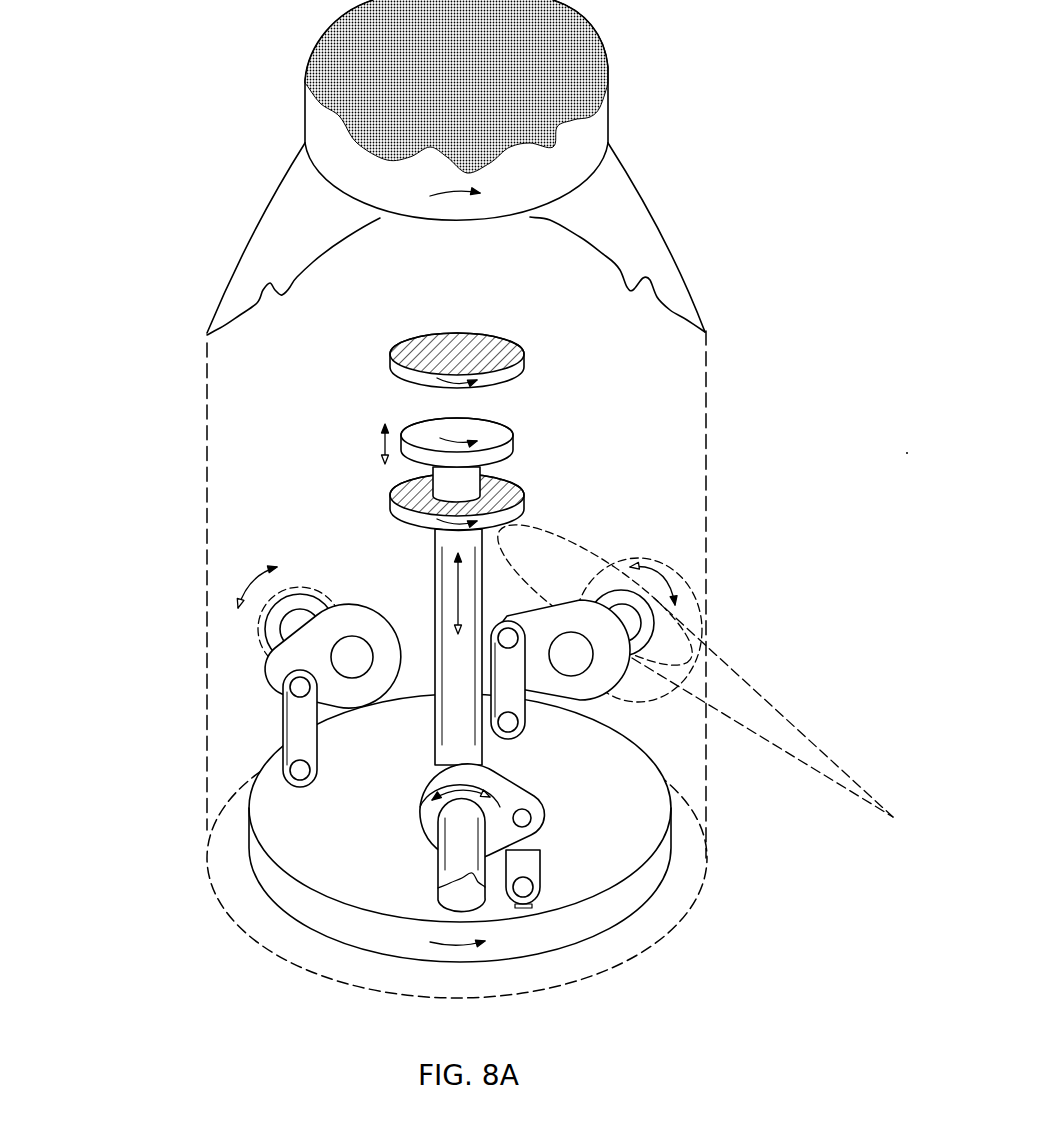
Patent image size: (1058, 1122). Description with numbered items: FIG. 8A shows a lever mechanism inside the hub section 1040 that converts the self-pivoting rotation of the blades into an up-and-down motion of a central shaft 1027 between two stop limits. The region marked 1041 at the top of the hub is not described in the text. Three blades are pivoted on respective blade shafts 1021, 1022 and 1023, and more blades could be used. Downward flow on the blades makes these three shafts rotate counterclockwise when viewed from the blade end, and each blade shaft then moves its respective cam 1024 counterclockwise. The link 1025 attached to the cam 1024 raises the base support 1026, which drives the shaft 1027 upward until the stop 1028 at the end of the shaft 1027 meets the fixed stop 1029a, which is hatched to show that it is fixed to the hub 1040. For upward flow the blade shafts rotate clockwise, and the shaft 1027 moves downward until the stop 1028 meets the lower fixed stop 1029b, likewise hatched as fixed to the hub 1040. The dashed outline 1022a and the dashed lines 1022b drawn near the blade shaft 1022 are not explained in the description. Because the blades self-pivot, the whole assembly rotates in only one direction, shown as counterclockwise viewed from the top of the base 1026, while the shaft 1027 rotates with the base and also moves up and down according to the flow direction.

The hub section 1040 is at (287, 403).
The material in container 1041 is at (456, 86).
The fixed stop 1029a is at (507, 373).
The stop 1028 is at (505, 452).
The fixed stop 1029b is at (505, 515).
The shaft 1027 is at (450, 550).
The blade shaft 1023 is at (290, 628).
The cam 1024 is at (280, 657).
The link 1025 is at (283, 748).
The blade shaft 1022 is at (662, 620).
The detection area 1022a is at (542, 560).
The detection beam 1022b is at (660, 630).
The base support 1026 is at (373, 810).
The blade shaft 1021 is at (462, 845).